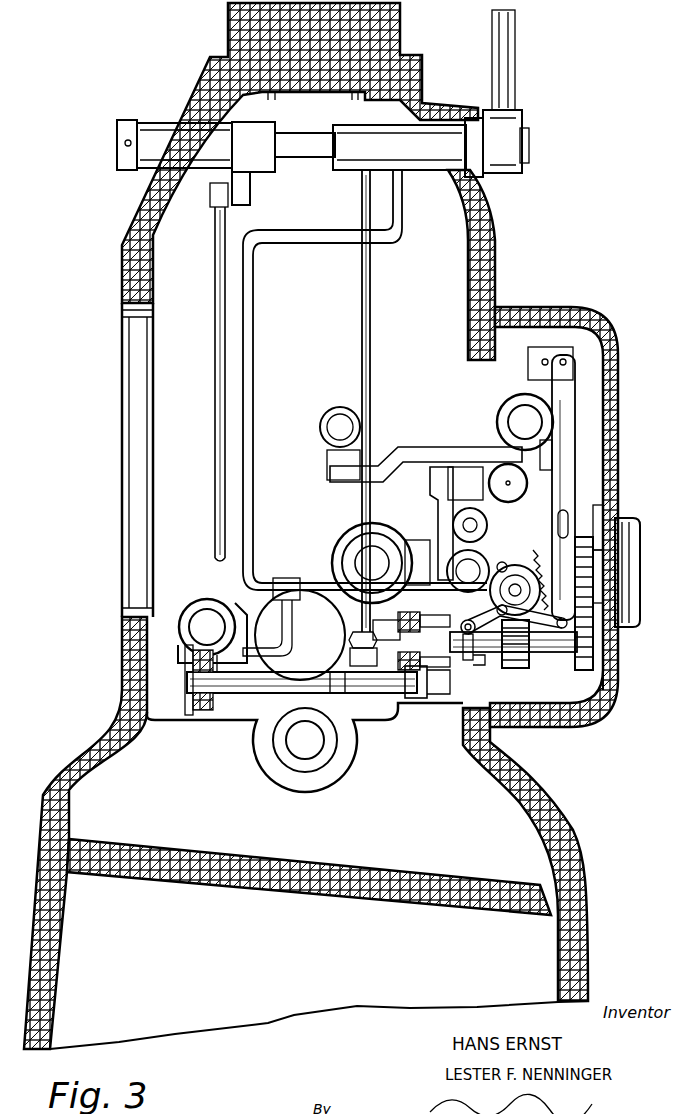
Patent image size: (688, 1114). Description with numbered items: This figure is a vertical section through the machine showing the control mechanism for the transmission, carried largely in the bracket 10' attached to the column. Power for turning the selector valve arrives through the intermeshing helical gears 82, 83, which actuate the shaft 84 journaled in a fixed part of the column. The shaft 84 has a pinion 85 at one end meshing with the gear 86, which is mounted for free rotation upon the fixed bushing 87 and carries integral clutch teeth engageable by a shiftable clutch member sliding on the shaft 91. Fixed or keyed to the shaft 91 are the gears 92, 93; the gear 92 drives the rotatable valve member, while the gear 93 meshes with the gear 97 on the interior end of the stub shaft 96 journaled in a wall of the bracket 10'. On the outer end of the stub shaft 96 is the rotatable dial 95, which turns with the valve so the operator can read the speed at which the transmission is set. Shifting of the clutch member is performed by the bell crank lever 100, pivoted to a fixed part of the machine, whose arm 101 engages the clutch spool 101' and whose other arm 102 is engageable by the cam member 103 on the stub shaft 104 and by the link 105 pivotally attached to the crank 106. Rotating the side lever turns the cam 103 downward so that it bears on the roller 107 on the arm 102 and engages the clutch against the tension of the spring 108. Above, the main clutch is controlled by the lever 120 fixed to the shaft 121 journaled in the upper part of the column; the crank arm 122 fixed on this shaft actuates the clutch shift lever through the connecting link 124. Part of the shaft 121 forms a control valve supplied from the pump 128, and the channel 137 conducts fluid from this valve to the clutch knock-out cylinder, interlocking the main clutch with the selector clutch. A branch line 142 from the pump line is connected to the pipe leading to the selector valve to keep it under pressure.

The bracket 10' is at (316, 526).
The lever 120 is at (515, 77).
The shaft 121 is at (293, 162).
The crank arm 122 is at (264, 170).
The connecting link 124 is at (222, 370).
The channel 137 is at (365, 313).
The branch line 142 is at (262, 582).
The helical gear 82 is at (205, 620).
The pump 128 is at (212, 603).
The shaft 84 is at (373, 695).
The helical gear 83 is at (208, 710).
The gear 86 is at (412, 614).
The pinion 85 is at (412, 704).
The fixed bushing 87 is at (410, 684).
The crank 106 is at (553, 350).
The link 105 is at (577, 382).
The spring 108 is at (612, 458).
The gear 97 is at (598, 512).
The stub shaft 96 is at (585, 540).
The rotatable dial 95 is at (618, 527).
The arm 102 is at (566, 626).
The gear 93 is at (612, 688).
The gear 92 is at (562, 712).
The stub shaft 104 is at (556, 530).
The cam member 103 is at (517, 565).
The shaft 91 is at (530, 625).
The roller 107 is at (513, 668).
The bell crank lever 100 is at (490, 640).
The arm 101 is at (456, 697).
The clutch spool 101' is at (456, 729).